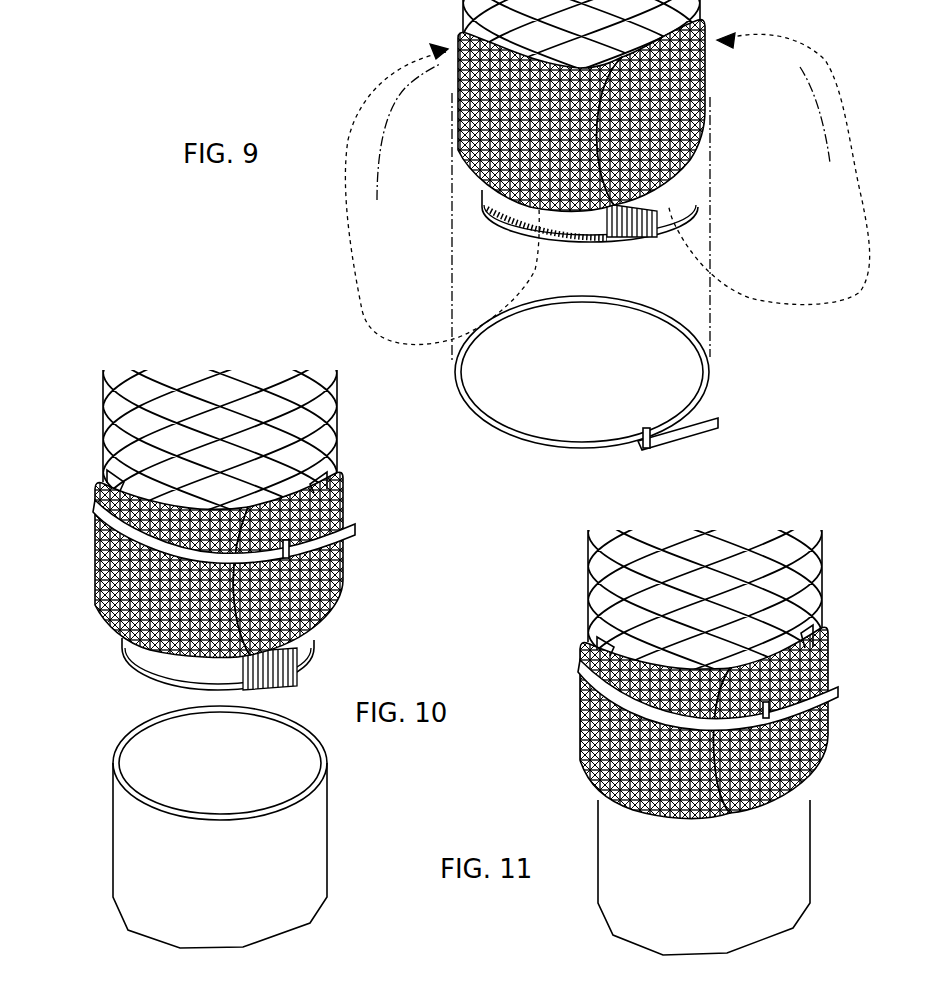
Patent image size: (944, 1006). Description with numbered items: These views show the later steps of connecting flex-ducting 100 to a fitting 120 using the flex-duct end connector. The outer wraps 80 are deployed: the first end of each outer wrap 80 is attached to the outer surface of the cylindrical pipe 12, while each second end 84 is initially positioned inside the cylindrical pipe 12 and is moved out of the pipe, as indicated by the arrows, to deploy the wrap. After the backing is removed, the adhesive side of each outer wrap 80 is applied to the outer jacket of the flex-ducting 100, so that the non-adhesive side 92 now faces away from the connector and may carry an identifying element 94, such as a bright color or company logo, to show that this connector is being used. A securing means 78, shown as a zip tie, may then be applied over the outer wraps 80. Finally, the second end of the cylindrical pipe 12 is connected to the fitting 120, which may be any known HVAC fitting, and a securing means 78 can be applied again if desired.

In FIG. 9, the cylindrical pipe 12 is at (568, 228).
In FIG. 10, the cylindrical pipe 12 is at (147, 657).
In FIG. 9, the securing means 78 is at (708, 388).
In FIG. 10, the securing means 78 is at (346, 504).
In FIG. 11, the securing means 78 is at (830, 655).
In FIG. 9, the outer wrap 80 is at (539, 175).
In FIG. 10, the outer wrap 80 is at (223, 564).
In FIG. 11, the outer wrap 80 is at (700, 722).
In FIG. 10, the second end 84 is at (124, 487).
In FIG. 11, the second end 84 is at (613, 645).
In FIG. 9, the non-adhesive side 92 is at (700, 88).
In FIG. 9, the identifying element 94 is at (478, 116).
In FIG. 10, the identifying element 94 is at (120, 627).
In FIG. 11, the identifying element 94 is at (600, 740).
In FIG. 10, the flex-ducting 100 is at (325, 434).
In FIG. 11, the flex-ducting 100 is at (802, 565).
In FIG. 10, the fitting 120 is at (310, 838).
In FIG. 11, the fitting 120 is at (608, 890).